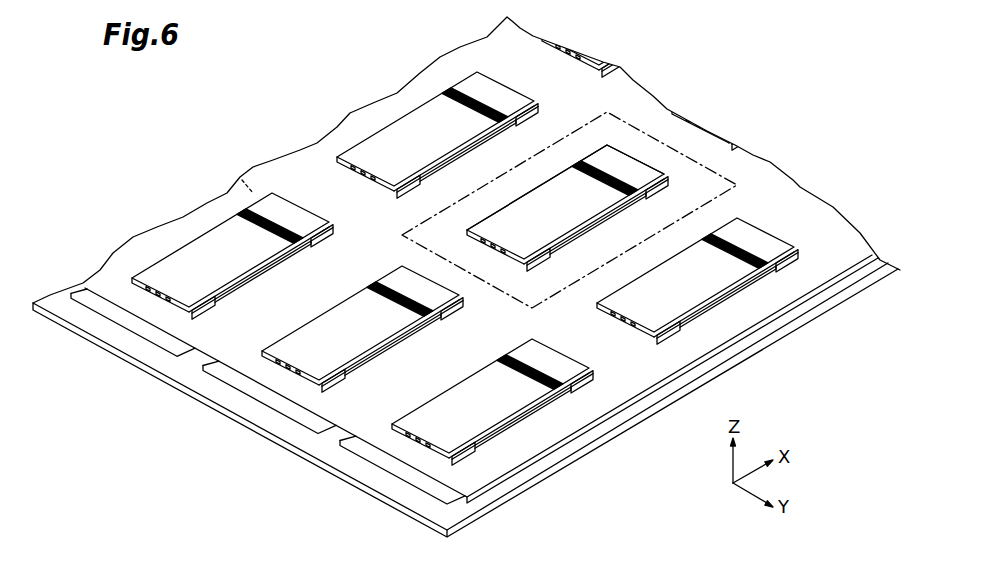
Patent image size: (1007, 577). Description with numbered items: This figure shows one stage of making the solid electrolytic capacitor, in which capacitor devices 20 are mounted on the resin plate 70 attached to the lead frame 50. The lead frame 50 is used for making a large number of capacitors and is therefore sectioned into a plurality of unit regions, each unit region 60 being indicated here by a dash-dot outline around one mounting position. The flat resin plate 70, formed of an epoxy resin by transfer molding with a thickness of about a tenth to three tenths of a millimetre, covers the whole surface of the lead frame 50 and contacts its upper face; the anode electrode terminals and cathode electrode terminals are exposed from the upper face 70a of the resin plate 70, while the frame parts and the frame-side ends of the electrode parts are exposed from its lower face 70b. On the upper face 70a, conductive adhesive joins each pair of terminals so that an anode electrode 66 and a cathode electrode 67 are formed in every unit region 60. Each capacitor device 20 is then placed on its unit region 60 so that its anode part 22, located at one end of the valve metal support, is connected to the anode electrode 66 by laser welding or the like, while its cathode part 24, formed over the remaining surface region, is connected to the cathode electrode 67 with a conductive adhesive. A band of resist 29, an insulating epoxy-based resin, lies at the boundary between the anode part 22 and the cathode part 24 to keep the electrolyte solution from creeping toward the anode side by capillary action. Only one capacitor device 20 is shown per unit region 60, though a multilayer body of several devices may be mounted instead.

The capacitor device 20 is at (591, 179).
The anode part 22 is at (565, 204).
The cathode part 24 is at (565, 202).
The resist 29 is at (605, 178).
The lead frame 50 is at (63, 283).
The unit region 60 is at (662, 143).
The anode electrode 66 is at (657, 188).
The cathode electrode 67 is at (586, 232).
The resin plate 70 is at (117, 252).
The upper face of resin plate 70a is at (312, 162).
The lower face of resin plate 70b is at (242, 180).